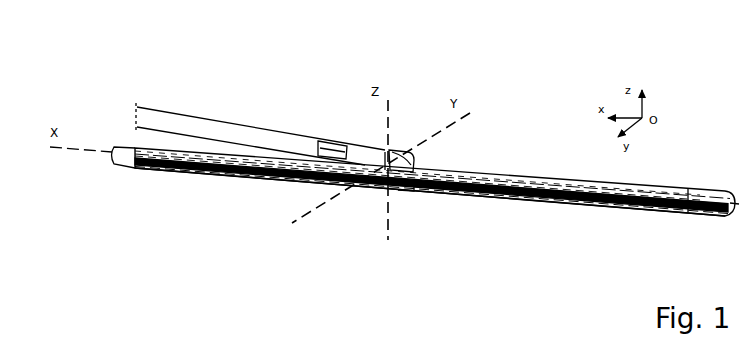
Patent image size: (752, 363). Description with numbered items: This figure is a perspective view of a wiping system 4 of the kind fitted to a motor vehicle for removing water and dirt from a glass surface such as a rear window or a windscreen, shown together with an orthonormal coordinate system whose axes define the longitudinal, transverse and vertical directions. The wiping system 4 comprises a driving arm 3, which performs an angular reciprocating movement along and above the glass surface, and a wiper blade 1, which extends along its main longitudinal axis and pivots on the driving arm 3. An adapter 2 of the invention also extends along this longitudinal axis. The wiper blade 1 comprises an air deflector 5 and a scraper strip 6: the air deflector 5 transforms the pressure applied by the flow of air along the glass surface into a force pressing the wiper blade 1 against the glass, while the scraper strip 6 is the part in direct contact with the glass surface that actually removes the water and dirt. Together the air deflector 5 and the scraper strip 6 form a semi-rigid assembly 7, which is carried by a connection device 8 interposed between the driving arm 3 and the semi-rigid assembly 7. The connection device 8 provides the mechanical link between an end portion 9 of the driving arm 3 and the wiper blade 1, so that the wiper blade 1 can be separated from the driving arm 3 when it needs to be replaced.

The wiper blade 1 is at (500, 170).
The adapter 2 is at (414, 156).
The driving arm 3 is at (152, 108).
The wiping system 4 is at (333, 88).
The air deflector 5 is at (212, 153).
The scraper strip 6 is at (268, 176).
The semi-rigid assembly 7 is at (558, 215).
The connection device 8 is at (408, 196).
The end portion 9 is at (325, 148).